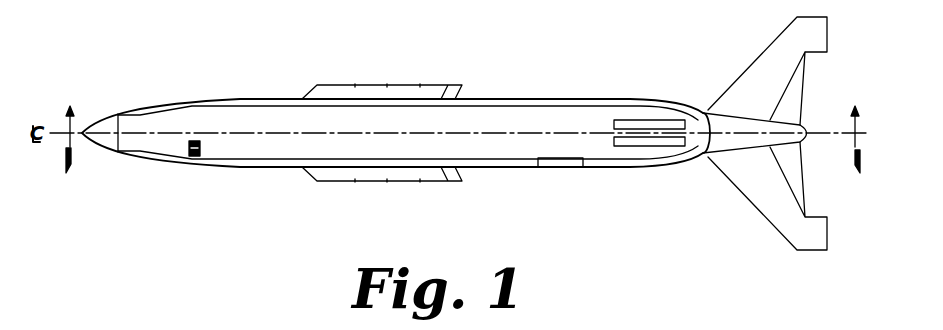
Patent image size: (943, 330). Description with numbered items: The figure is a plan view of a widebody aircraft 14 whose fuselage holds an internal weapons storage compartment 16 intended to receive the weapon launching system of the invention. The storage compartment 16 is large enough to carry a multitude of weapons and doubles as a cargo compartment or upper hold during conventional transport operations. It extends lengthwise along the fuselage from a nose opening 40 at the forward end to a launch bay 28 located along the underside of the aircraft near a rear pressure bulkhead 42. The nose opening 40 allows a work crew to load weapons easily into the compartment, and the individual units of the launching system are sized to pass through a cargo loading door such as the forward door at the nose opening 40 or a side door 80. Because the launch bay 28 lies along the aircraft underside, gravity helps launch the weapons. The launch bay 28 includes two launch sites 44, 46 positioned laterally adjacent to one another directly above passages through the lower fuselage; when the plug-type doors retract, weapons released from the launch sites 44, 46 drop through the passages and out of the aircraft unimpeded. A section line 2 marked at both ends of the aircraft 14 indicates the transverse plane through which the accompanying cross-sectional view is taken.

The section line 2- 2 is at (461, 129).
The aircraft 14 is at (233, 79).
The internal weapons storage compartment 16 is at (267, 115).
The launch bay 28 is at (648, 119).
The nose opening 40 is at (117, 118).
The rear pressure bulkhead 42 is at (707, 112).
The launch site 44 is at (637, 146).
The launch site 46 is at (627, 120).
The side door 80 is at (558, 166).